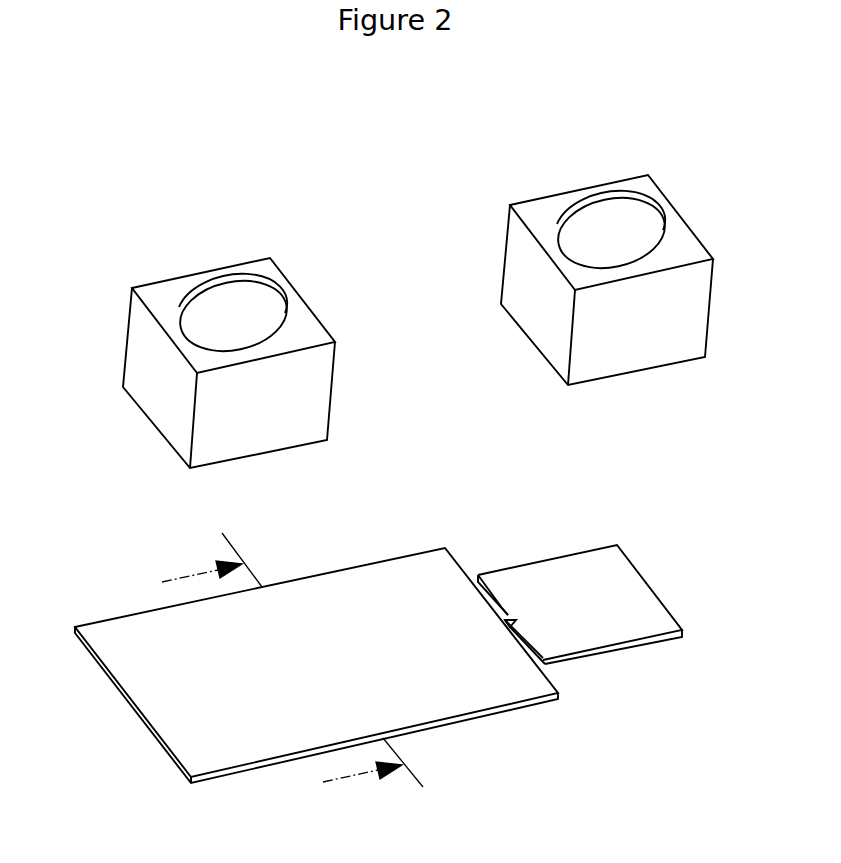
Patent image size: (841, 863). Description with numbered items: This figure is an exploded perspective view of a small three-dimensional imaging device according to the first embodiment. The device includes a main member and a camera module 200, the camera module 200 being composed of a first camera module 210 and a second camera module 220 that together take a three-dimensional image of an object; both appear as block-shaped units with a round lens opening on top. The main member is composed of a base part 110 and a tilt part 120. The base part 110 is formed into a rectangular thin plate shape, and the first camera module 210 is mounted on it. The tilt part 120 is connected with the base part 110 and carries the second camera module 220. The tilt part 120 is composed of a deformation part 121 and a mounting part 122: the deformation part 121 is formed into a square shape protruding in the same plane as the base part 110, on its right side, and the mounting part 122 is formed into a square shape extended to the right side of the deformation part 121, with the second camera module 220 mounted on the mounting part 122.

The camera module 200 is at (617, 102).
The first camera module 210 is at (228, 310).
The second camera module 220 is at (618, 243).
The base part 110 is at (204, 731).
The tilt part 120 is at (608, 700).
The deformation part 121 is at (512, 615).
The mounting part 122 is at (615, 613).